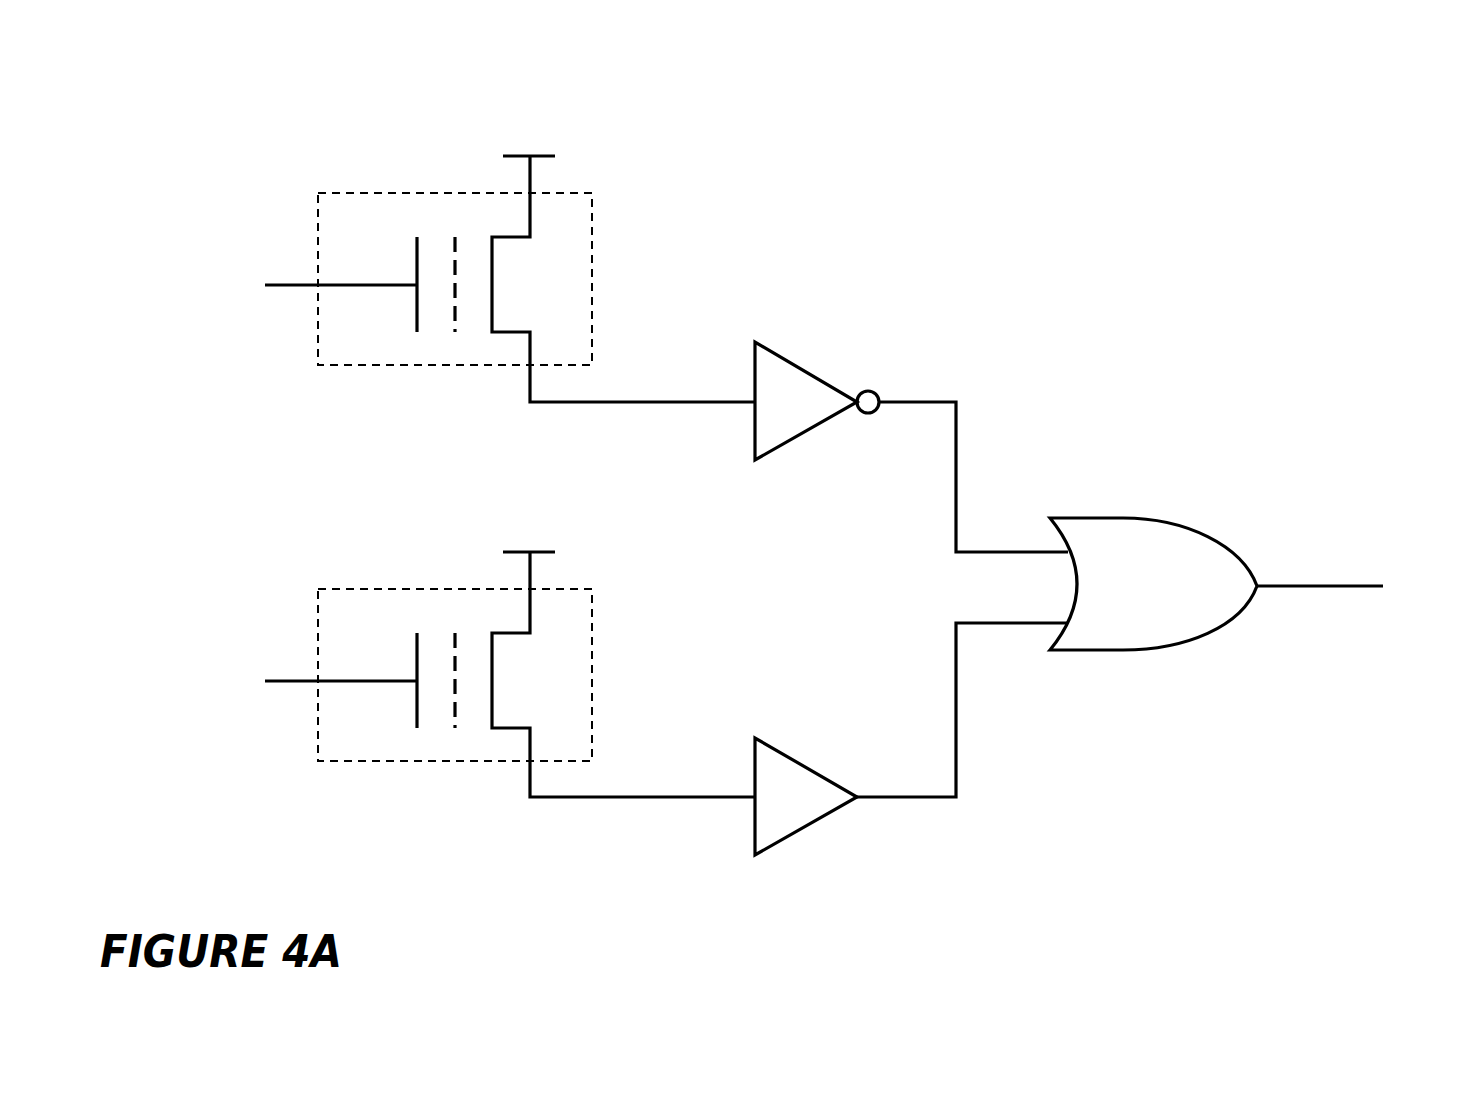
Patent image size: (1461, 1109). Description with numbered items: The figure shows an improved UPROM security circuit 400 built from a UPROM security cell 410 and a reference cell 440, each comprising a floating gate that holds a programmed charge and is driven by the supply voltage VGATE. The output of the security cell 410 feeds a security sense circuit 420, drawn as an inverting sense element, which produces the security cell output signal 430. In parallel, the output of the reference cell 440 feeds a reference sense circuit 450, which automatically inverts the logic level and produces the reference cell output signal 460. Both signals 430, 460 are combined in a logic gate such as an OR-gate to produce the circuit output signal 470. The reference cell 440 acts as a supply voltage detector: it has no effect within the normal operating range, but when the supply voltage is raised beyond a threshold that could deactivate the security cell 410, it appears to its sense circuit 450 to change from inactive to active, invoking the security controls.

The UPROM security circuit 400 is at (1118, 243).
The UPROM security cell 410 is at (431, 250).
The security sense circuit 420 is at (817, 392).
The security cell output signal 430 is at (994, 447).
The reference cell 440 is at (431, 645).
The reference sense circuit 450 is at (806, 787).
The reference cell output signal 460 is at (972, 763).
The circuit output signal 470 is at (1244, 584).